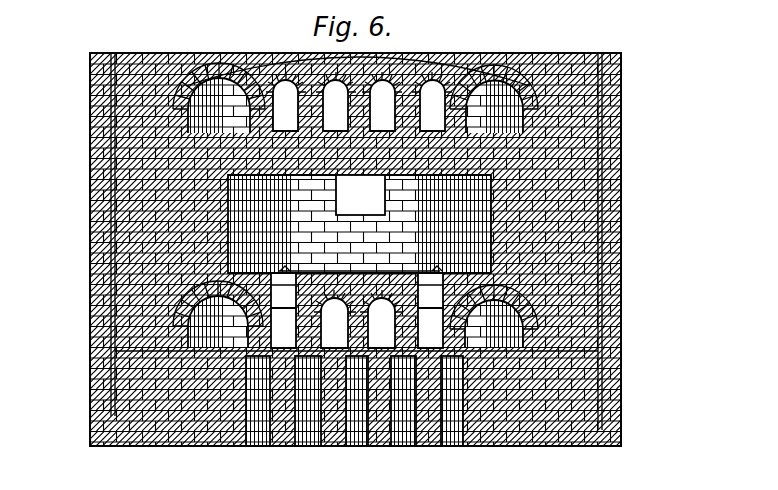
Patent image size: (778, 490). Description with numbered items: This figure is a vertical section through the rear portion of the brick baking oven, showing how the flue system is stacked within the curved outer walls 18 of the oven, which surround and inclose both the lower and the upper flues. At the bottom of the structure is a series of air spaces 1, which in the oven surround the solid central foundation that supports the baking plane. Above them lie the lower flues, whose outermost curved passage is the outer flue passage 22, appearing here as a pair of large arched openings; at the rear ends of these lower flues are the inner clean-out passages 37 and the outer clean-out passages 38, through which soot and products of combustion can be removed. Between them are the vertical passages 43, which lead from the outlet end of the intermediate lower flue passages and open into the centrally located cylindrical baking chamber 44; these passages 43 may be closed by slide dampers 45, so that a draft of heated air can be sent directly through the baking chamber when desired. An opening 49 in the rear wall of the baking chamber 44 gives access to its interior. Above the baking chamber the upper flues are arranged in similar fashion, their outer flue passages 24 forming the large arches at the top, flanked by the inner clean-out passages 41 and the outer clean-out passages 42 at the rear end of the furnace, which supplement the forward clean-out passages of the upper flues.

The air spaces 1 is at (388, 430).
The outer walls of the oven 18 is at (595, 239).
The outer flue passage 22 is at (478, 312).
The outer flue passages 24 is at (477, 93).
The inner clean-out passages 37 is at (358, 319).
The outer clean-out passages 38 is at (357, 328).
The inner clean-out passages 41 is at (359, 101).
The outer clean-out passages 42 is at (359, 101).
The vertical passages 43 is at (428, 285).
The baking chamber 44 is at (359, 224).
The slide dampers 45 is at (288, 262).
The opening 49 is at (360, 195).